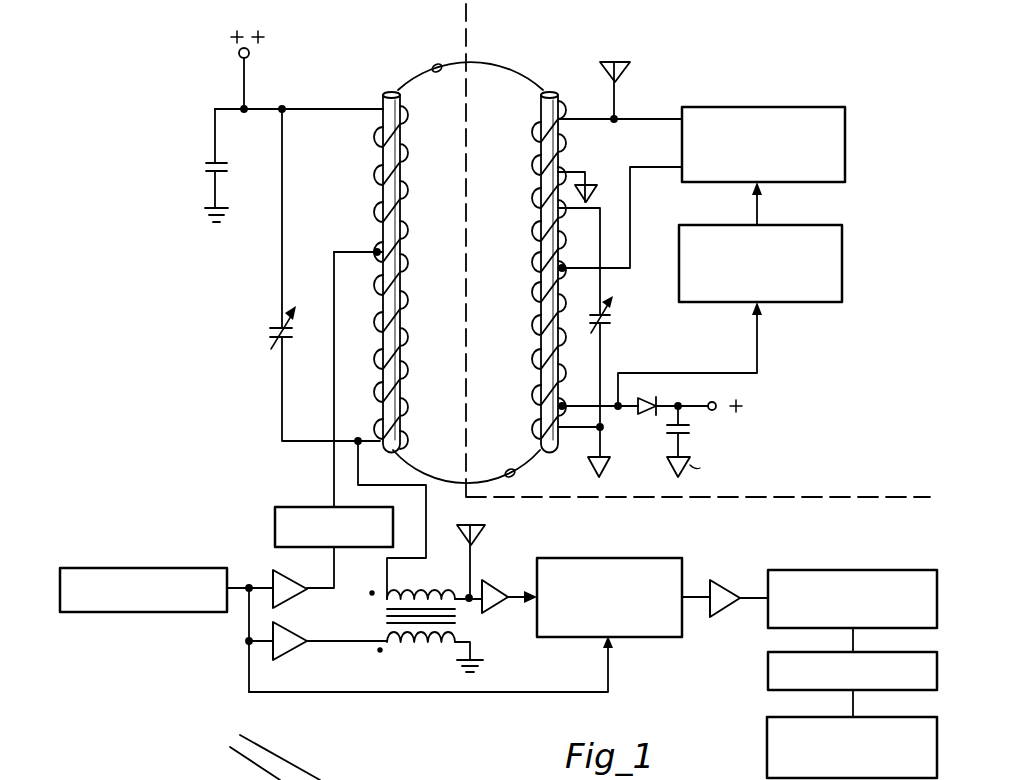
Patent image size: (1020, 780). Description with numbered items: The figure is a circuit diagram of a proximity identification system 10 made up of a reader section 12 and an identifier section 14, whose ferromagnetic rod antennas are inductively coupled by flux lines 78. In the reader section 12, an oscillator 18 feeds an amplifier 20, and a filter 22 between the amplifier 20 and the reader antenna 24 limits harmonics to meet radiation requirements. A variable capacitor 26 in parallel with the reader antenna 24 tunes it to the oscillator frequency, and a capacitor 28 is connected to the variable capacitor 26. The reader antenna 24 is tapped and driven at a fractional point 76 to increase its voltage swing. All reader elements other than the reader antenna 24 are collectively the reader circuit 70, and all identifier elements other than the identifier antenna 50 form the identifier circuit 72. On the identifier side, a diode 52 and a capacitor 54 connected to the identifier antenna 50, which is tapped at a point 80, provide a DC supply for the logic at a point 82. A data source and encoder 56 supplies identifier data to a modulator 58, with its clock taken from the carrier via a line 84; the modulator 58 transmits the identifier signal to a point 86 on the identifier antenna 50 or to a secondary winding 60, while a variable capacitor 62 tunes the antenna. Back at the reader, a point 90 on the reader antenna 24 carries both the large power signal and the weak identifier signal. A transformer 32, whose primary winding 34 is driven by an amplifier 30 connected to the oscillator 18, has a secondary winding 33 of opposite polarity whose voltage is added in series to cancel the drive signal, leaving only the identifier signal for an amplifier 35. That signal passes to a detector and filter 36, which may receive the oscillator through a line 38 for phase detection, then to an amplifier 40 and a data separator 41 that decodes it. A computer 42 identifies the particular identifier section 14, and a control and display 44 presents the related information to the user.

The proximity identification system 10 is at (218, 648).
The reader section 12 is at (410, 60).
The identifier section 14 is at (528, 58).
The oscillator 18 is at (176, 568).
The amplifier 20 is at (274, 576).
The filter 22 is at (334, 420).
The reader antenna 24 is at (378, 158).
The variable capacitor 26 is at (270, 341).
The capacitor 28 is at (206, 167).
The amplifier 30 is at (296, 634).
The transformer 32 is at (387, 616).
The secondary winding 33 is at (414, 592).
The primary winding 34 is at (416, 647).
The amplifier 35 is at (499, 576).
The detector and filter circuit 36 is at (622, 558).
The line 38 is at (334, 692).
The amplifier 40 is at (736, 571).
The data separator 41 is at (883, 570).
The computer 42 is at (768, 674).
The control and display 44 is at (767, 750).
The identifier antenna 50 is at (535, 190).
The diode 52 is at (640, 413).
The capacitor 54 is at (690, 430).
The data source and encoder 56 is at (804, 225).
The modulator 58 is at (805, 107).
The secondary winding 60 is at (588, 113).
The variable capacitor 62 is at (611, 320).
The reader circuit 70 is at (290, 95).
The identifier circuit 72 is at (645, 104).
The fractional point 76 is at (374, 250).
The flux lines 78 is at (408, 79).
The point 80 is at (612, 62).
The point 82 is at (472, 523).
The line 84 is at (686, 373).
The point 86 is at (566, 265).
The point 90 is at (357, 438).